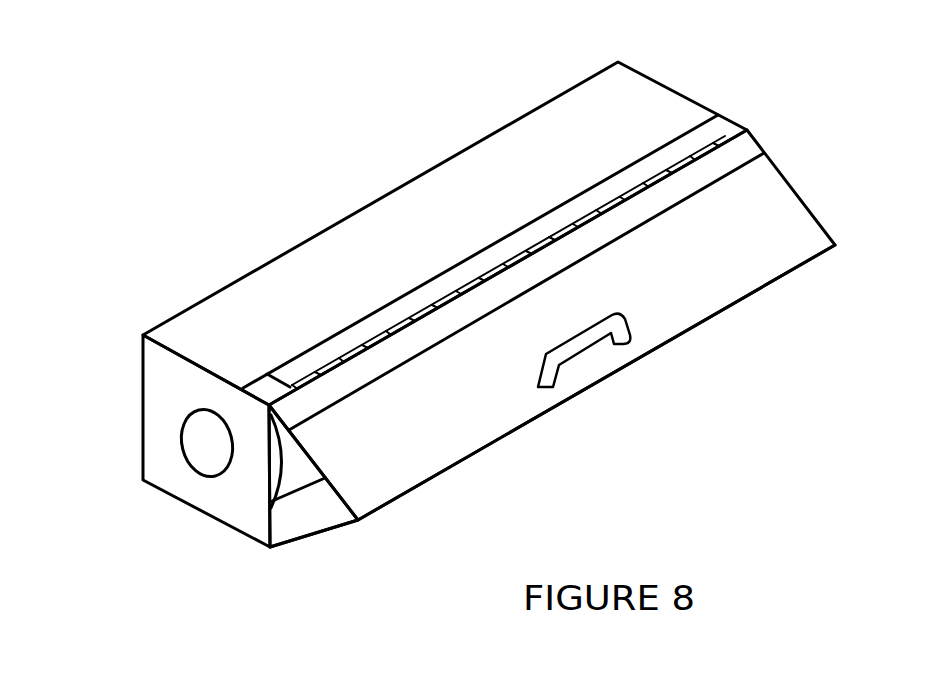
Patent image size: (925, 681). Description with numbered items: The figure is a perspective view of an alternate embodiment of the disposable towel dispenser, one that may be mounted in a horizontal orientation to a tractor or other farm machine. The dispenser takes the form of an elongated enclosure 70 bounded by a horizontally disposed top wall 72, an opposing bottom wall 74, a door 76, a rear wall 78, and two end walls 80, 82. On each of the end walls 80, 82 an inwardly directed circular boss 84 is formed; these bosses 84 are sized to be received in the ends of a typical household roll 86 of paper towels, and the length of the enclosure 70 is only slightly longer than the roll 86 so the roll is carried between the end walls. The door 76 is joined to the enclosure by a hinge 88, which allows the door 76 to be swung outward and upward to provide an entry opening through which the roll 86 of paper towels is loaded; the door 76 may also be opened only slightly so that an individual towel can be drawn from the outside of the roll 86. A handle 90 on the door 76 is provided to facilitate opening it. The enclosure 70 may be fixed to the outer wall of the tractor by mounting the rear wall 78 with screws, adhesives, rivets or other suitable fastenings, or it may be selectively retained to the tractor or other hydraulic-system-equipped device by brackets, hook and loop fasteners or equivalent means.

The enclosure 70 is at (464, 326).
The top wall 72 is at (446, 296).
The bottom wall 74 is at (317, 505).
The door 76 is at (561, 384).
The rear wall 78 is at (178, 313).
The end wall 80 is at (151, 457).
The end wall 82 is at (551, 201).
The circular boss 84 is at (203, 447).
The roll of paper towels 86 is at (297, 475).
The hinge 88 is at (748, 153).
The handle 90 is at (580, 343).